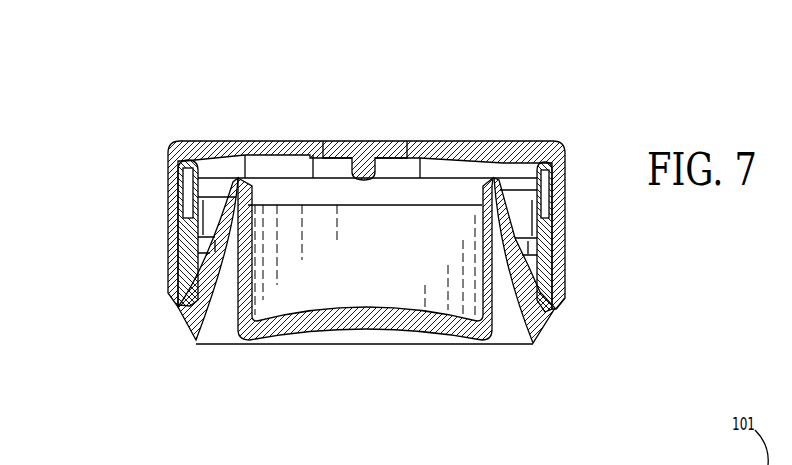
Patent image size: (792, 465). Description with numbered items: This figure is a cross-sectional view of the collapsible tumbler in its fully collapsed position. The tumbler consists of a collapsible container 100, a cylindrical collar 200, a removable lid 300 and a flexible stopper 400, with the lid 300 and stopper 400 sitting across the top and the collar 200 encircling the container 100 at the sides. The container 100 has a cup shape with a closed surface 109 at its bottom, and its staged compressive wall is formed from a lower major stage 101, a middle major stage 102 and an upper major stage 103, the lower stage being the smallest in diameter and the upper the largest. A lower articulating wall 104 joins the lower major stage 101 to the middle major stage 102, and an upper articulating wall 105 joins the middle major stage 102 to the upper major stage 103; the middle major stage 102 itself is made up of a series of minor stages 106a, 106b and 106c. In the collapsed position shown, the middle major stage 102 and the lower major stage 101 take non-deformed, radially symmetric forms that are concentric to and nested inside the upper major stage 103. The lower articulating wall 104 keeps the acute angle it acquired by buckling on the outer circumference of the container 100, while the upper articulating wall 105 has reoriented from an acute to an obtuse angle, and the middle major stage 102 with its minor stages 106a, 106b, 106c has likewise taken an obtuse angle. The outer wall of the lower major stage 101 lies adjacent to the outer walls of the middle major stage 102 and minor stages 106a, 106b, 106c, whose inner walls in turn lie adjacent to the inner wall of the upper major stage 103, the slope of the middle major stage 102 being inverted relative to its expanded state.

The collapsible container 100 is at (368, 355).
The lower major stage 101 is at (323, 290).
The middle major stage 102 is at (513, 258).
The upper major stage 103 is at (548, 313).
The lower articulating wall 104 is at (503, 190).
The upper articulating wall 105 is at (537, 333).
The minor stage 106a is at (222, 192).
The minor stage 106b is at (212, 268).
The minor stage 106c is at (206, 317).
The closed surface 109 is at (440, 328).
The cylindrical collar 200 is at (147, 263).
The removable lid 300 is at (149, 125).
The flexible stopper 400 is at (357, 123).